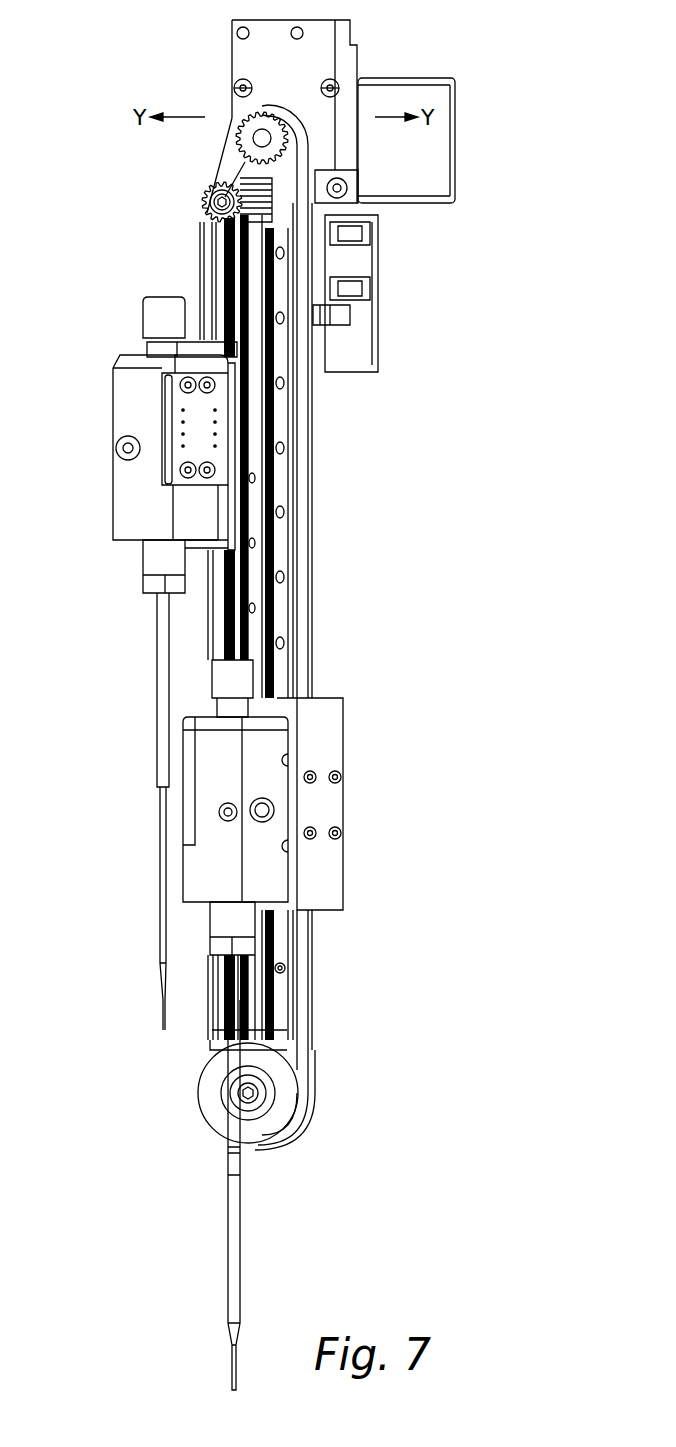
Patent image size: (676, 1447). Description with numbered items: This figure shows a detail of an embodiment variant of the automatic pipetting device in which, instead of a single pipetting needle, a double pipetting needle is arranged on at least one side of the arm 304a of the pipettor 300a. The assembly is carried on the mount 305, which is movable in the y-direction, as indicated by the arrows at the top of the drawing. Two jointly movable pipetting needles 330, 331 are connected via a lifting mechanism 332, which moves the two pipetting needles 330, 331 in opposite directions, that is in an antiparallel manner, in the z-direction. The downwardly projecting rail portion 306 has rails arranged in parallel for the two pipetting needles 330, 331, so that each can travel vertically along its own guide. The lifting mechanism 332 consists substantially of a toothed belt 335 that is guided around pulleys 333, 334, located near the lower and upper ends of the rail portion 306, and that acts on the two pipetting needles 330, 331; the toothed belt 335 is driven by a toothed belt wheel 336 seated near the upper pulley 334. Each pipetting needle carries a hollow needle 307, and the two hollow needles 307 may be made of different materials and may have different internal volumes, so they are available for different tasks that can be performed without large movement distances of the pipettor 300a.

The pipettor 300a is at (364, 610).
The arm 304a is at (433, 158).
The mount 305 is at (240, 62).
The rail portion 306 is at (283, 553).
The hollow needle 307 is at (160, 753).
The pipetting needle 330 is at (324, 888).
The pipetting needle 331 is at (142, 506).
The lifting mechanism 332 is at (204, 262).
The pulley 333 is at (315, 1097).
The pulley 334 is at (275, 107).
The toothed belt 335 is at (302, 681).
The toothed belt wheel 336 is at (210, 192).